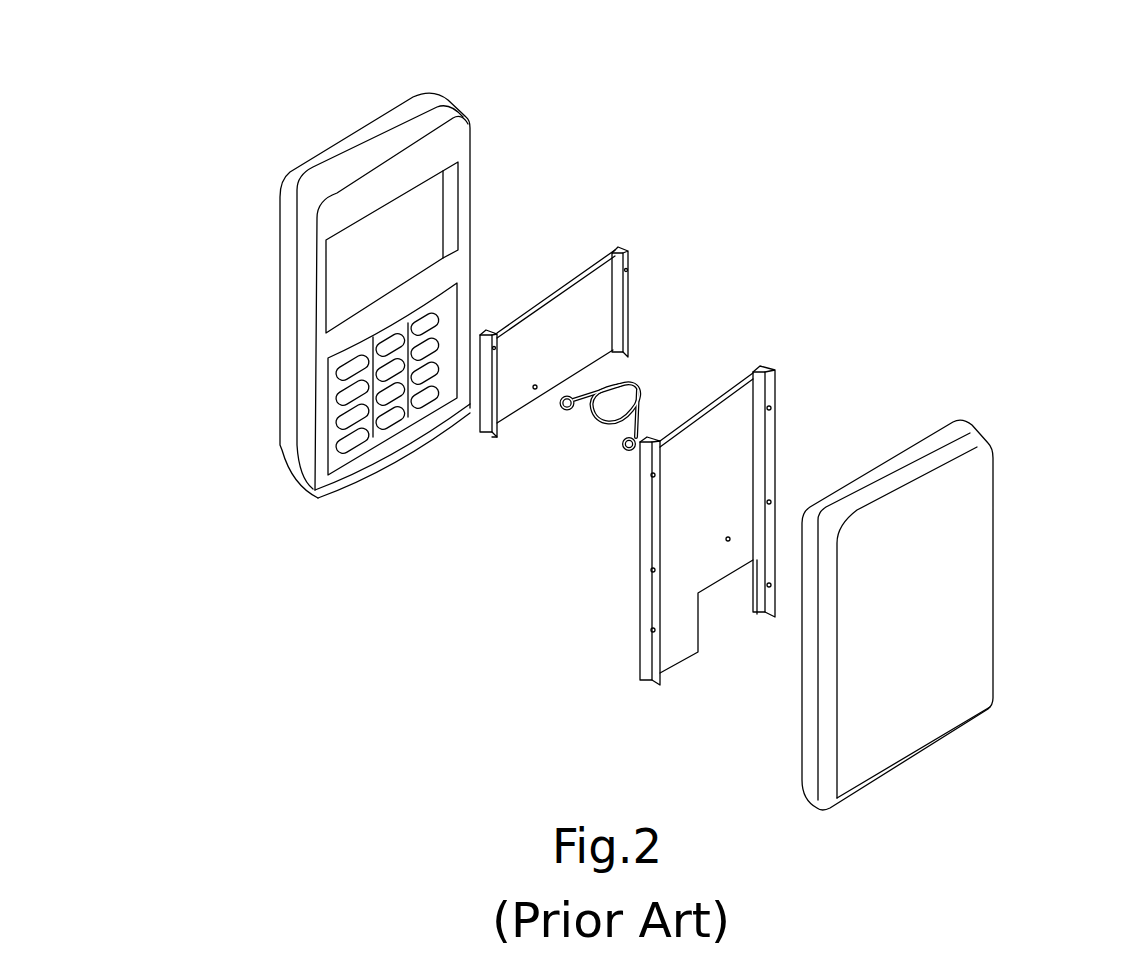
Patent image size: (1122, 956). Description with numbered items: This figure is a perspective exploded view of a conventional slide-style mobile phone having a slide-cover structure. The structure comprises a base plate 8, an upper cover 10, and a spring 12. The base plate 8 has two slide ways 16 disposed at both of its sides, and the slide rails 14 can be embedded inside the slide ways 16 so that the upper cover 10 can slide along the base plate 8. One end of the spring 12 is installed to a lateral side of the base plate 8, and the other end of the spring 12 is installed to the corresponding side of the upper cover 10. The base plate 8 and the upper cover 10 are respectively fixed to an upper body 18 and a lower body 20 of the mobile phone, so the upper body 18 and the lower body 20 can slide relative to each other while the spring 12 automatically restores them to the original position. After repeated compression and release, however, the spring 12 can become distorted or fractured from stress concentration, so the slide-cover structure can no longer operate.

The base plate 8 is at (588, 265).
The upper cover 10 is at (687, 460).
The spring 12 is at (597, 423).
The slide rails 14 is at (767, 363).
The slide ways 16 is at (617, 320).
The upper body 18 is at (303, 233).
The lower body 20 is at (963, 623).